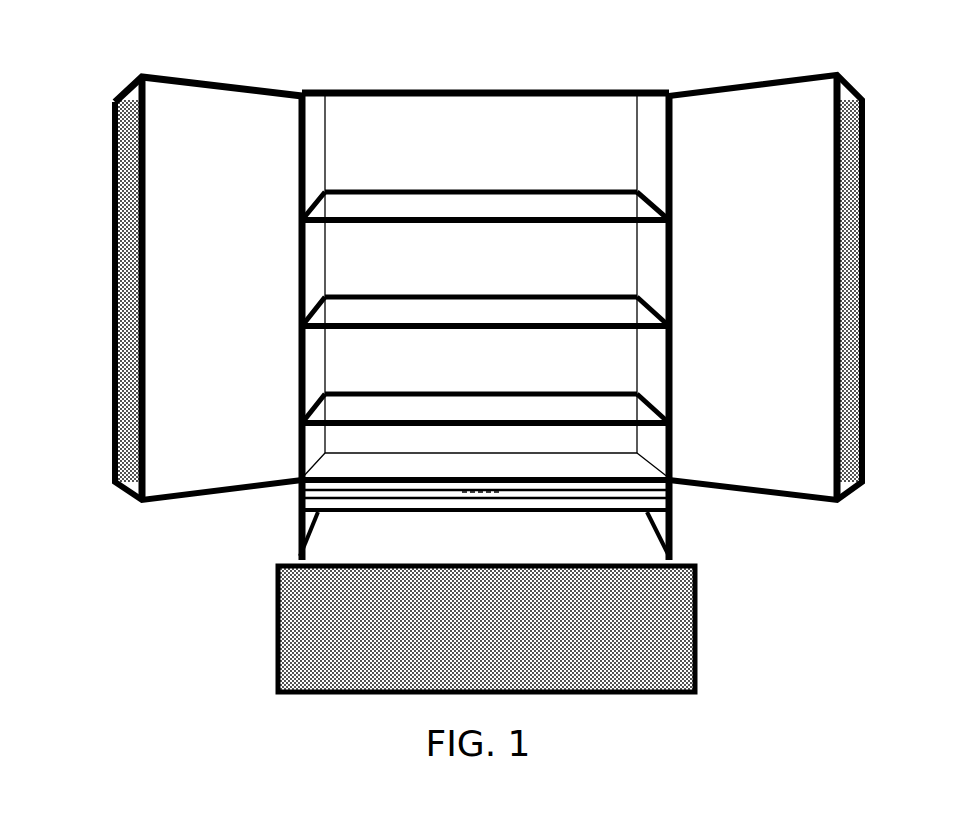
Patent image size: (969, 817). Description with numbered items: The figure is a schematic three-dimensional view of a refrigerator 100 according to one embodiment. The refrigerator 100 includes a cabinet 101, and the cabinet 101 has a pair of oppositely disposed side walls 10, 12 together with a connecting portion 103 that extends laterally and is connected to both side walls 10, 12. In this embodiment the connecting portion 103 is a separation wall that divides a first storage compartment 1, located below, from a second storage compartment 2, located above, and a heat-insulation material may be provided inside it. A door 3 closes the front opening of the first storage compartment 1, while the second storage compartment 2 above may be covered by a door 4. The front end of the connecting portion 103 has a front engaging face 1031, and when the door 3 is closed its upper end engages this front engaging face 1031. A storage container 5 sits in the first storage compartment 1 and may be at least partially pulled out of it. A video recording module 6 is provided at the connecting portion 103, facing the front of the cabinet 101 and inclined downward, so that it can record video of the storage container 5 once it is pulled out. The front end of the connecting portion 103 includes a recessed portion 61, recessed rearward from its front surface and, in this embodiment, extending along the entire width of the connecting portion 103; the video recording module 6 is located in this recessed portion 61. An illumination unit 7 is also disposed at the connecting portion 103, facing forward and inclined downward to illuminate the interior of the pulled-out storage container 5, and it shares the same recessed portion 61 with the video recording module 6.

The refrigerator 100 is at (461, 355).
The cabinet 101 is at (567, 90).
The door 4 is at (113, 224).
The side wall 10 is at (312, 282).
The second storage compartment 2 is at (485, 287).
The side wall 12 is at (653, 273).
The recessed portion 61 is at (548, 494).
The connecting portion 103 is at (447, 501).
The front engaging face 1031 is at (522, 509).
The video recording module 6 is at (480, 519).
The illumination unit 7 is at (492, 497).
The first storage compartment 1 is at (488, 508).
The storage container 5 is at (310, 553).
The door 3 is at (295, 612).